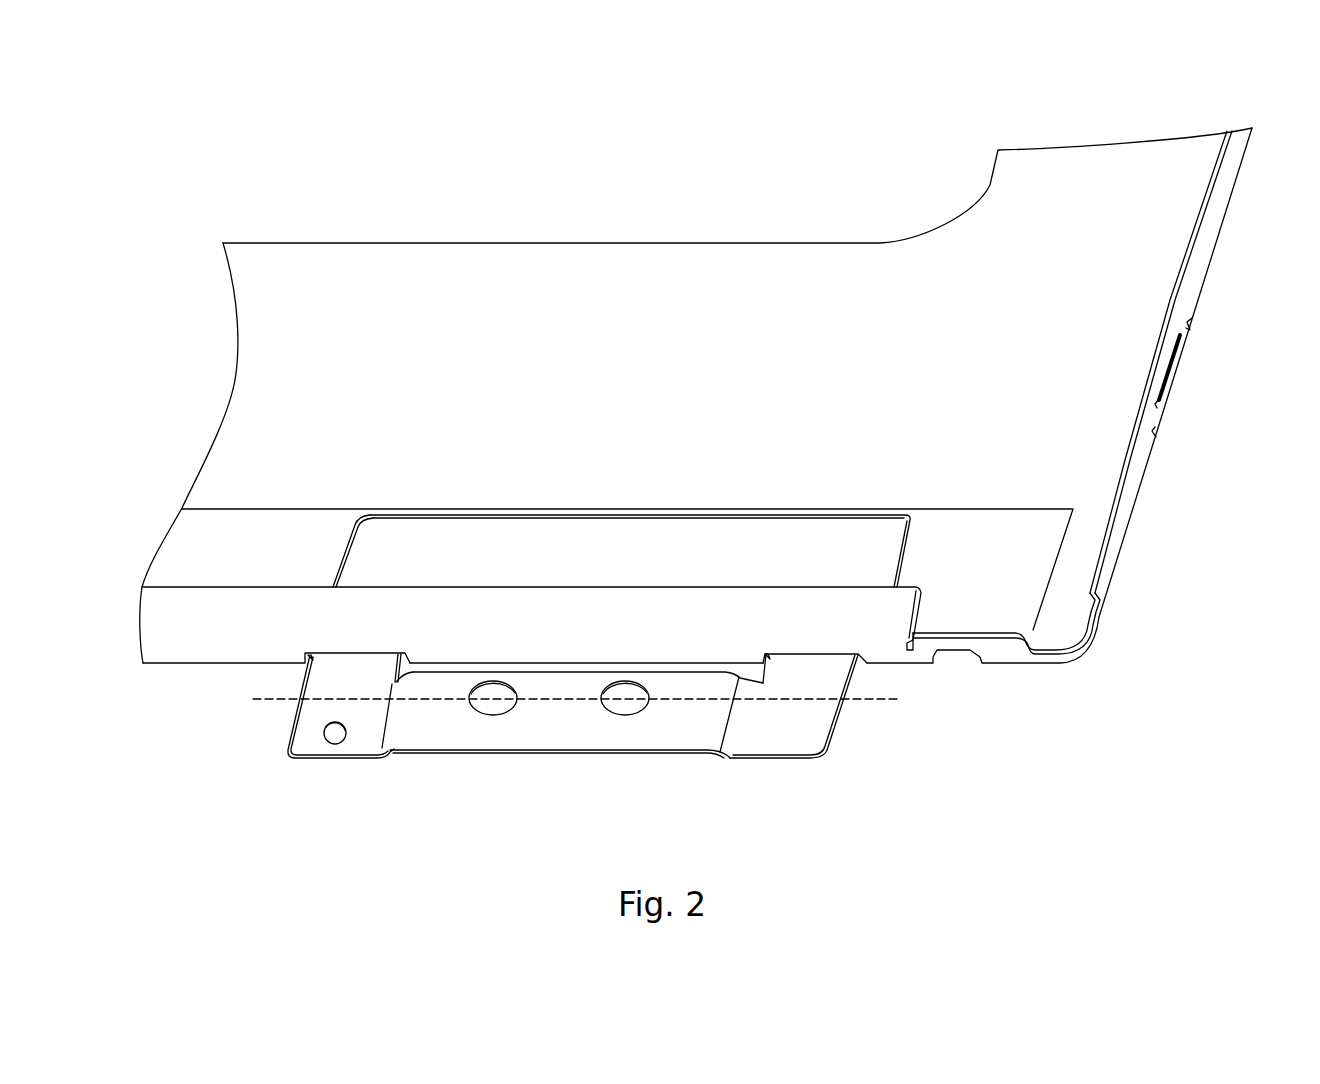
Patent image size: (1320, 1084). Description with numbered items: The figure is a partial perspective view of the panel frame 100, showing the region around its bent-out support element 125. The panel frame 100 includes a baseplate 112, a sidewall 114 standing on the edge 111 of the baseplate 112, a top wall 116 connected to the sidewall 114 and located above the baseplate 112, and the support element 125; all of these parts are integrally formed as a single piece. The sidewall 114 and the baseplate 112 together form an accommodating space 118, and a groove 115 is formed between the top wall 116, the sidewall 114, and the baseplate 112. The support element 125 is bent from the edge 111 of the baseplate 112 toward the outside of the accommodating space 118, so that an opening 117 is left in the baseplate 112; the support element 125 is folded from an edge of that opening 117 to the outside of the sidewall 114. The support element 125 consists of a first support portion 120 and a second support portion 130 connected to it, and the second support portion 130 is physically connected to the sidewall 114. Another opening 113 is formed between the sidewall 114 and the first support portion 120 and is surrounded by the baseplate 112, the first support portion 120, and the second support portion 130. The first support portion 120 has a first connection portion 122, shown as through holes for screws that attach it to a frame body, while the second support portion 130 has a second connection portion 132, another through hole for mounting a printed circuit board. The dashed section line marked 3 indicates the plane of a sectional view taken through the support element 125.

The panel frame 100 is at (160, 118).
The edge 111 is at (182, 680).
The baseplate 112 is at (610, 438).
The opening 113 is at (758, 672).
The sidewall 114 is at (888, 655).
The groove 115 is at (935, 607).
The top wall 116 is at (718, 620).
The opening 117 is at (483, 535).
The accommodating space 118 is at (1150, 291).
The first support portion 120 is at (438, 727).
The first connection portion 122 is at (530, 716).
The support element 125 is at (567, 773).
The second support portion 130 is at (367, 727).
The second connection portion 132 is at (338, 762).
The section line 3- 3 is at (268, 712).